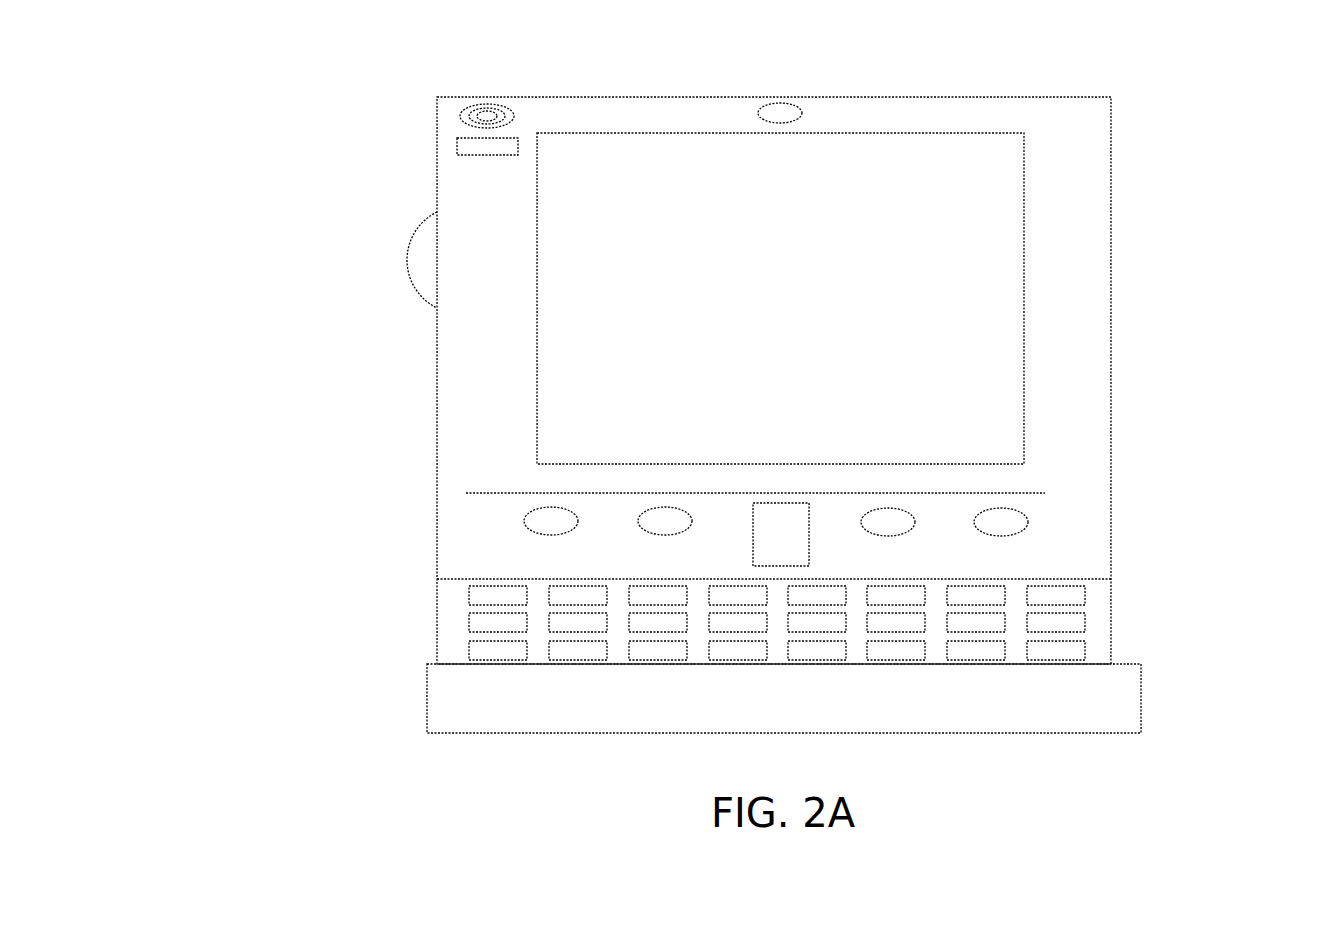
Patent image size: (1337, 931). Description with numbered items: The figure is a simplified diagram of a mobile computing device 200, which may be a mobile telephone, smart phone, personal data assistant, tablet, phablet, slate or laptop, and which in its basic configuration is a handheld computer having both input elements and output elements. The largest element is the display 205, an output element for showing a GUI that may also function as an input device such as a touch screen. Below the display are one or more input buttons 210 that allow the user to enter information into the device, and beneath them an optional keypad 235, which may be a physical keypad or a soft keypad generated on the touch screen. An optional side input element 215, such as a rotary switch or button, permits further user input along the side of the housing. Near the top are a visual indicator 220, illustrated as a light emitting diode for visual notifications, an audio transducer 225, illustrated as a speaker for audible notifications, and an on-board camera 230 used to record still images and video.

The mobile computing device 200 is at (1100, 108).
The display 205 is at (685, 407).
The input buttons 210 is at (778, 534).
The side input element 215 is at (424, 258).
The visual indicator 220 is at (452, 148).
The audio transducer 225 is at (461, 117).
The on-board camera 230 is at (802, 114).
The keypad 235 is at (437, 655).